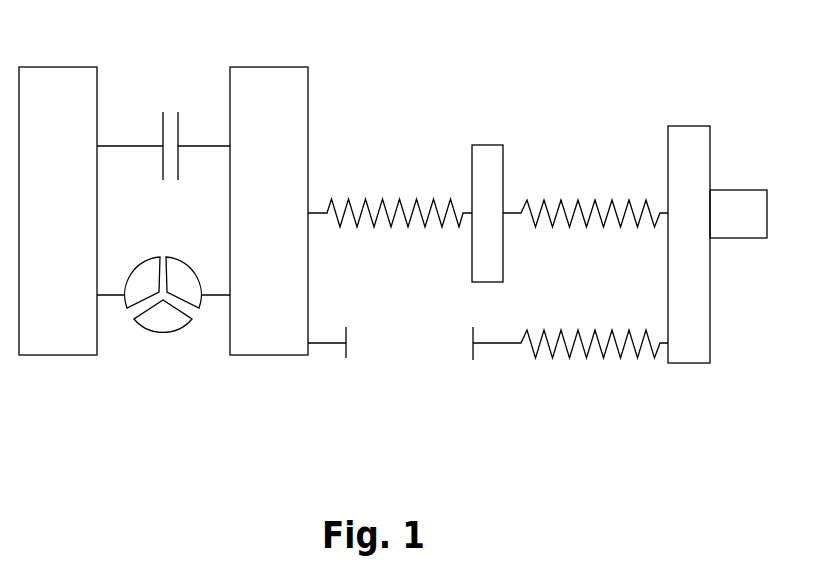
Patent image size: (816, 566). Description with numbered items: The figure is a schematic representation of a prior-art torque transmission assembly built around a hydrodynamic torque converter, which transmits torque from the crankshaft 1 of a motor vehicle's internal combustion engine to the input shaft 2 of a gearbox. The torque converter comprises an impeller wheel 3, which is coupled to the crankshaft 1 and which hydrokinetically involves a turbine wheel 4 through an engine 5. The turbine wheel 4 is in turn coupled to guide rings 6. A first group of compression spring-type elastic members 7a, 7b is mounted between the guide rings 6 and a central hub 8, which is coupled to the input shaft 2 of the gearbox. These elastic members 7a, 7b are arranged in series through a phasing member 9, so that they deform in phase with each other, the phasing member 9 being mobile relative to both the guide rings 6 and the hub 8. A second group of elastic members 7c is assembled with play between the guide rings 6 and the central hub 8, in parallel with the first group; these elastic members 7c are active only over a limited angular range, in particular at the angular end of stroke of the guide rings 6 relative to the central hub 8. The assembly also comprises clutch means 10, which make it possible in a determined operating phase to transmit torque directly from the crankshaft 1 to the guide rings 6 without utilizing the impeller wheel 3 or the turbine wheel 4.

The crankshaft 1 is at (57, 327).
The input shaft 2 is at (730, 207).
The impeller wheel 3 is at (130, 306).
The turbine wheel 4 is at (197, 308).
The engine 5 is at (160, 305).
The guide rings 6 is at (282, 105).
The elastic member 7a is at (388, 197).
The elastic member 7b is at (568, 204).
The elastic member 7c is at (597, 353).
The central hub 8 is at (682, 143).
The phasing member 9 is at (485, 162).
The clutch means 10 is at (172, 110).